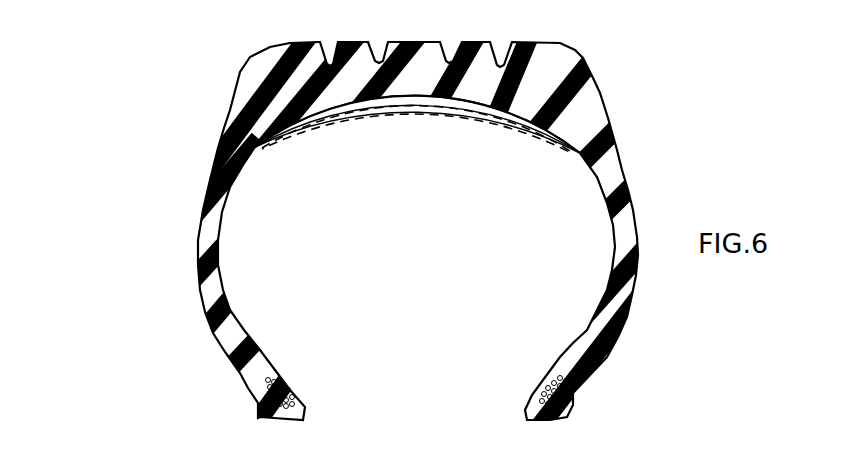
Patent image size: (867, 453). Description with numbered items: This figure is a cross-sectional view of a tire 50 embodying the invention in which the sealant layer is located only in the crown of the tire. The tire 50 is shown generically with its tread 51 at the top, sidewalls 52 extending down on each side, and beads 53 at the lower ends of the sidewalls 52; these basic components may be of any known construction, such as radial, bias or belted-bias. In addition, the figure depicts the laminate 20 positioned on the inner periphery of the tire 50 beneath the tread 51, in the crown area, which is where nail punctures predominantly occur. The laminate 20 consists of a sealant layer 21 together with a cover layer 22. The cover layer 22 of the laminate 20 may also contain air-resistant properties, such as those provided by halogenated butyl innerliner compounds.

The laminate 20 is at (357, 116).
The sealant layer 21 is at (422, 114).
The cover layer 22 is at (458, 113).
The tire 50 is at (229, 72).
The tread 51 is at (436, 41).
The sidewalls 52 is at (198, 246).
The beads 53 is at (292, 397).